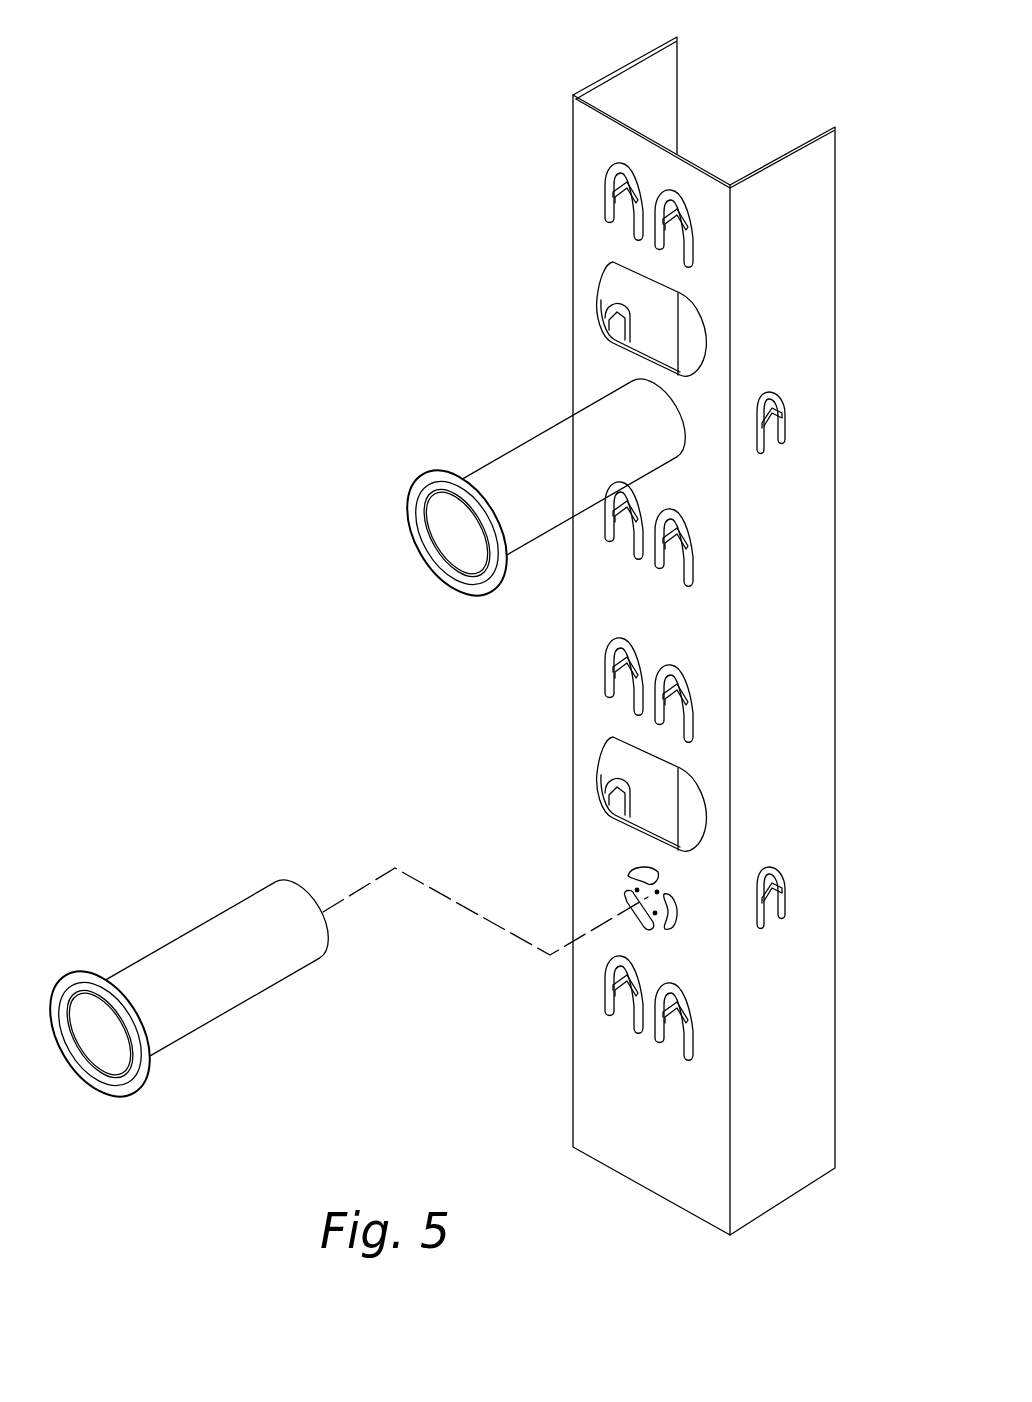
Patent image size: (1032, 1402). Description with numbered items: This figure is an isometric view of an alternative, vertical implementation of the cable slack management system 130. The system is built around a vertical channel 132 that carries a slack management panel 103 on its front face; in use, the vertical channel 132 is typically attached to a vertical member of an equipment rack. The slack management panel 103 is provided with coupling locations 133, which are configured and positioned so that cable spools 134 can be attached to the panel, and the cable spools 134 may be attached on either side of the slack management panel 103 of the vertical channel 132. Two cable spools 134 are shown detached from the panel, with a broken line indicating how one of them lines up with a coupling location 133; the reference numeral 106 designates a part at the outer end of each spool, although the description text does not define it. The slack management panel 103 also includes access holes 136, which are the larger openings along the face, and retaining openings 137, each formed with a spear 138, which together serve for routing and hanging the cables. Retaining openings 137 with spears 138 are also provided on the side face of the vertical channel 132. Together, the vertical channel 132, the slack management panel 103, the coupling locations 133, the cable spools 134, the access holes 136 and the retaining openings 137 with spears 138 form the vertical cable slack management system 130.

The cable slack management system 130 is at (425, 62).
The slack management panel 103 is at (593, 133).
The vertical channel 132 is at (808, 221).
The coupling location 133 is at (608, 886).
The cable spool 134 is at (550, 450).
The flange 106 is at (480, 598).
The access hole 136 is at (613, 283).
The retaining opening 137 is at (622, 183).
The spear 138 is at (622, 208).